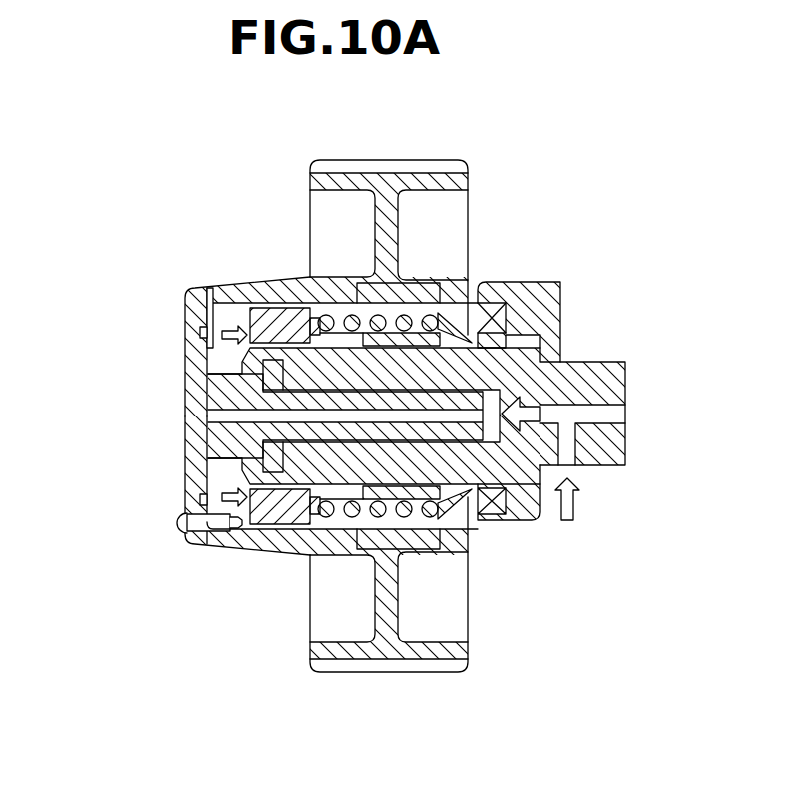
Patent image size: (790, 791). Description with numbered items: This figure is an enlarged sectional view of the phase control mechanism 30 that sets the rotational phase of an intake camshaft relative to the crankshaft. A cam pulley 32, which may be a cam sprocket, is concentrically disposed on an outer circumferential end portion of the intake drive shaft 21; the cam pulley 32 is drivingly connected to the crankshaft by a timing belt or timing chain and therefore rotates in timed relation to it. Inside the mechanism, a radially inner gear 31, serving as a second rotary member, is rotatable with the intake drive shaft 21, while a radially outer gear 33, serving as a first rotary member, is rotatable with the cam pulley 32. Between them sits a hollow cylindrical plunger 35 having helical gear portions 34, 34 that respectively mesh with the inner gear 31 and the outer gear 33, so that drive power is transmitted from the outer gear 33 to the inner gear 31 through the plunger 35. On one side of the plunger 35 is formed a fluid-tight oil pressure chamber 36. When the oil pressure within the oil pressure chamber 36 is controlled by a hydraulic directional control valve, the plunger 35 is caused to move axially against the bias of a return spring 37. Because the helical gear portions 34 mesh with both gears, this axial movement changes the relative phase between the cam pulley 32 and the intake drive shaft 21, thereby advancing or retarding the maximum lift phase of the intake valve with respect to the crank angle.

The intake drive shaft 21 is at (592, 455).
The phase control mechanism 30 is at (147, 459).
The radially inner gear 31 is at (313, 362).
The cam pulley 32 is at (425, 188).
The radially outer gear 33 is at (328, 292).
The helical gear portions 34 is at (292, 528).
The hollow cylindrical plunger 35 is at (277, 315).
The oil pressure chamber 36 is at (228, 315).
The return spring 37 is at (448, 327).